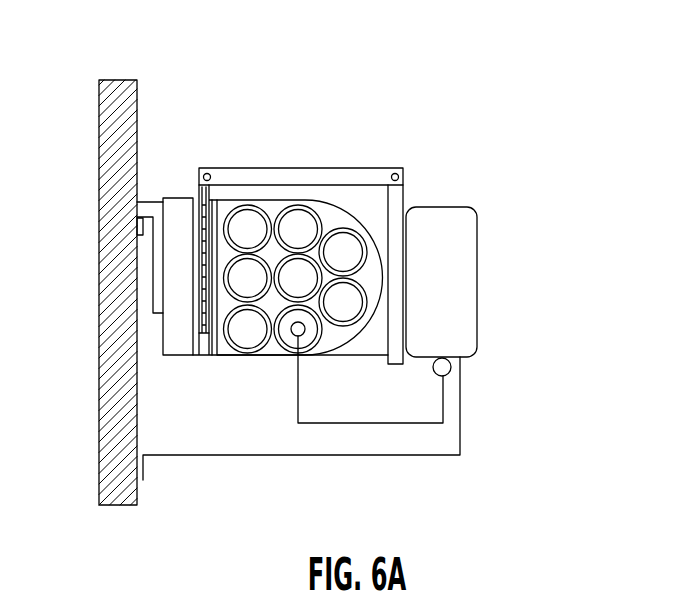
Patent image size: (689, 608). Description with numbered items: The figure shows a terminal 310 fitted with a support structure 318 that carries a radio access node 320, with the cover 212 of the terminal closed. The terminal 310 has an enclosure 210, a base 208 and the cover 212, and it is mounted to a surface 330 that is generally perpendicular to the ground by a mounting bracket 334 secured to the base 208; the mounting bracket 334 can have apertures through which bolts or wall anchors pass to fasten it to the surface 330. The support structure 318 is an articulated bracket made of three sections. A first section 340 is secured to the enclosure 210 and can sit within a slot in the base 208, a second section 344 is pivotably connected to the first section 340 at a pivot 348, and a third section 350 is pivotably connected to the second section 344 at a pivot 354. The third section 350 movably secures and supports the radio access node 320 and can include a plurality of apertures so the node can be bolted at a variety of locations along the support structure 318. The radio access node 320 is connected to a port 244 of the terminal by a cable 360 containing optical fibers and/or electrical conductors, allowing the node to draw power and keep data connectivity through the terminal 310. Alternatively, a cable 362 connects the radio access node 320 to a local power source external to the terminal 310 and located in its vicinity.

The terminal 310 is at (341, 42).
The surface 330 is at (107, 228).
The mounting bracket 334 is at (150, 198).
The base 208 is at (178, 208).
The second section 344 is at (276, 178).
The pivot 348 is at (210, 175).
The pivot 354 is at (397, 174).
The support structure 318 is at (329, 148).
The third section 350 is at (399, 203).
The first section 340 is at (203, 333).
The enclosure 210 is at (343, 195).
The cover 212 is at (258, 357).
The port 244 is at (305, 336).
The radio access node 320 is at (472, 238).
The cable 360 is at (445, 378).
The cable 362 is at (385, 457).